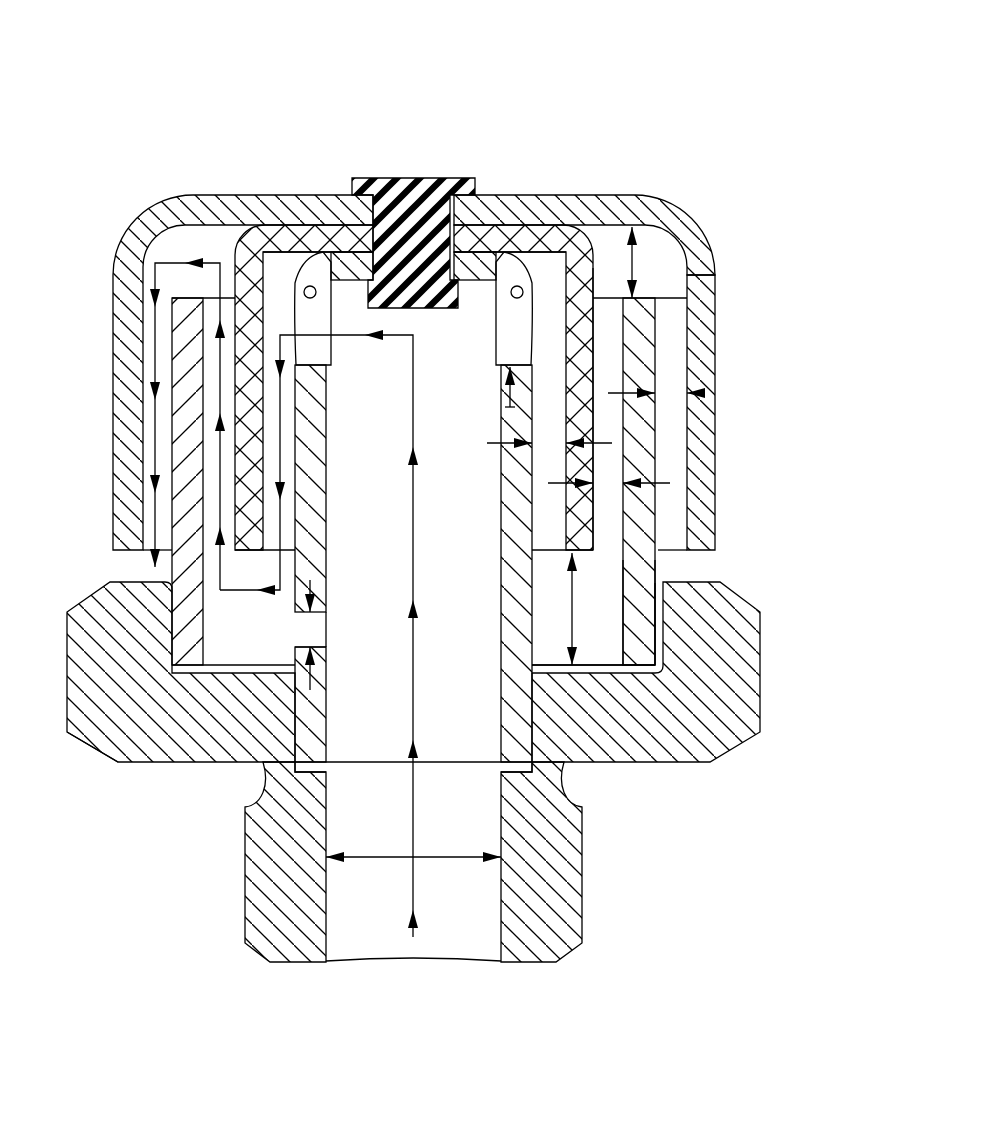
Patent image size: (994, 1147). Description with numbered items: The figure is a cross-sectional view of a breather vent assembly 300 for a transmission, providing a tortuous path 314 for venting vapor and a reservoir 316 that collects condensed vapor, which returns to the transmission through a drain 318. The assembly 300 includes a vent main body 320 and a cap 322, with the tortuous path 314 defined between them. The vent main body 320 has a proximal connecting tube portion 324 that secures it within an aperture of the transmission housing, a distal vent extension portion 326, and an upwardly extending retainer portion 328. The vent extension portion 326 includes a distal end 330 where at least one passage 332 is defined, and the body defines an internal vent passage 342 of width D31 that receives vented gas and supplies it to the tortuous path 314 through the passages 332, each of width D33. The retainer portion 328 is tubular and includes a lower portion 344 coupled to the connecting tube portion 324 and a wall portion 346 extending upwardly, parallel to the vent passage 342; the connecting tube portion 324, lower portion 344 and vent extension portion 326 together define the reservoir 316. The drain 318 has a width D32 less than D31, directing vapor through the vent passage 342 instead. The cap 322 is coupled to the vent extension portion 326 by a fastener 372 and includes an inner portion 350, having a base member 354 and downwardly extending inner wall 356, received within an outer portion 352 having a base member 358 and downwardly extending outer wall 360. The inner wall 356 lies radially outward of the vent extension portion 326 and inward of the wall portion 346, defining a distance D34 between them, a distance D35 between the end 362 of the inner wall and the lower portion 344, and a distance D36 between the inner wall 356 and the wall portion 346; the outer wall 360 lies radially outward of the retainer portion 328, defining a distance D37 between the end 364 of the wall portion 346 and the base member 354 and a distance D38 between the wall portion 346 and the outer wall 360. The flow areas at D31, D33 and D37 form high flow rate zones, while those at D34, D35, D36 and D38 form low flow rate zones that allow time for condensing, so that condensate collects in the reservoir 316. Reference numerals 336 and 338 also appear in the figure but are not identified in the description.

The breather vent assembly 300 is at (716, 84).
The tortuous path 314 is at (150, 357).
The reservoir 316 is at (232, 652).
The drain 318 is at (305, 655).
The vent main body 320 is at (628, 824).
The cap 322 is at (692, 192).
The connecting tube portion 324 is at (243, 912).
The vent extension portion 326 is at (524, 738).
The retainer portion 328 is at (659, 651).
The distal end 330 is at (507, 282).
The passage 332 is at (312, 280).
The fitting wall 336 is at (583, 937).
The body chamfer 338 is at (152, 748).
The internal vent passage 342 is at (447, 964).
The lower portion 344 is at (643, 612).
The upwardly extending wall portion 346 is at (650, 320).
The inner portion 350 is at (234, 224).
The outer portion 352 is at (140, 210).
The base member 354 is at (524, 240).
The inner wall 356 is at (597, 300).
The base member 358 is at (638, 205).
The outer wall 360 is at (708, 438).
The end 362 is at (573, 552).
The end 364 is at (658, 300).
The fastener 372 is at (415, 193).
The vent passage width D31 is at (440, 855).
The drain width D32 is at (310, 580).
The passage width D33 is at (510, 400).
The distance between vent extension portion and inner wall D34 is at (493, 444).
The distance between inner wall end and lower portion D35 is at (568, 612).
The distance between inner wall and wall portion D36 is at (670, 483).
The distance between wall portion end and base D37 is at (640, 257).
The distance between wall portion and outer wall D38 is at (700, 393).